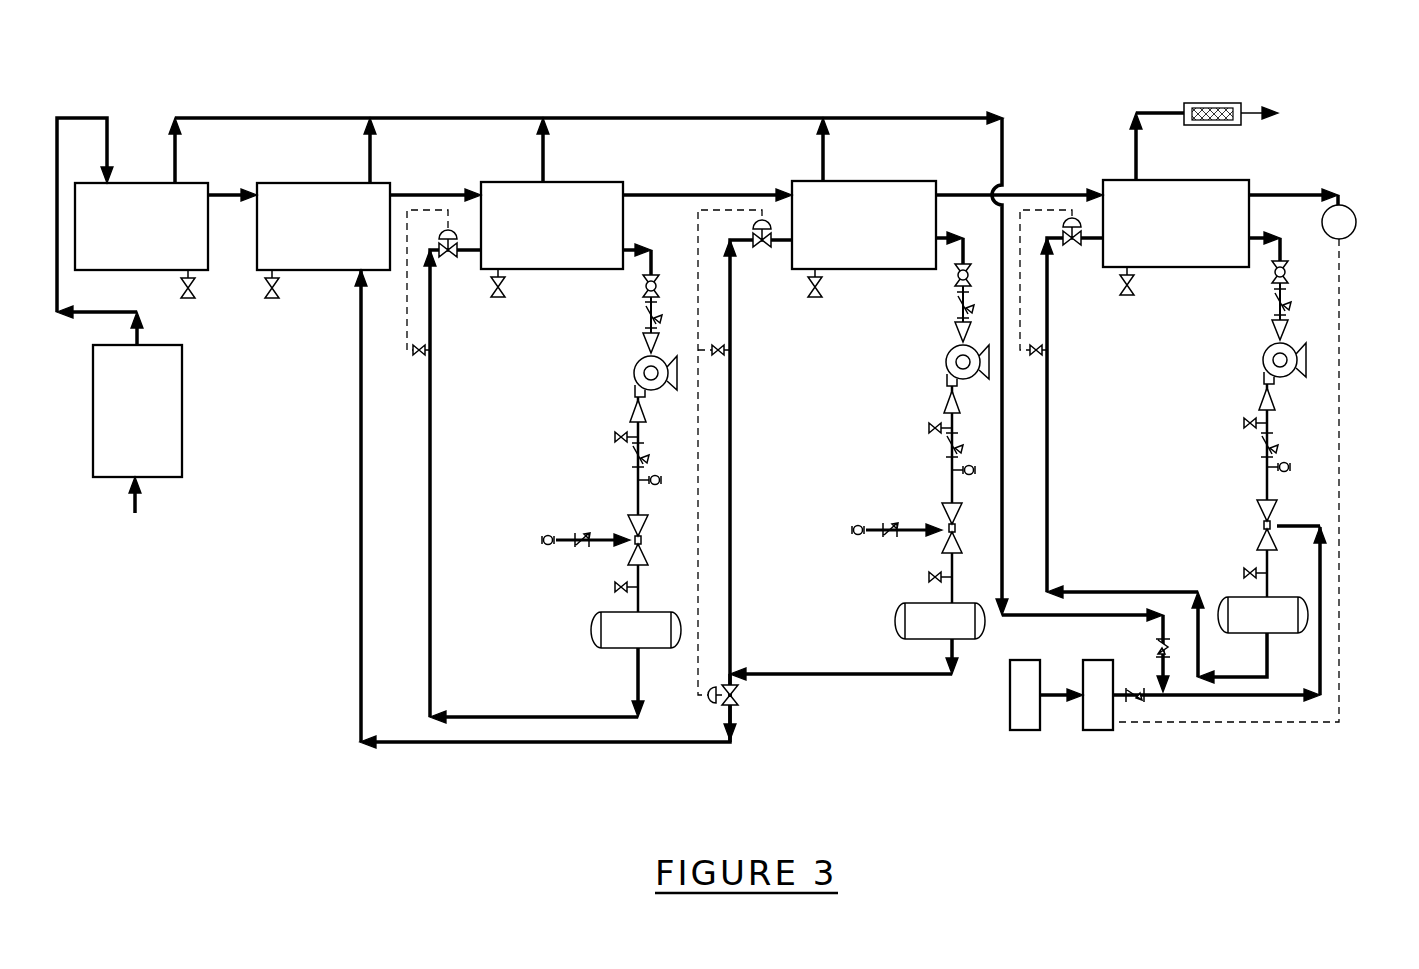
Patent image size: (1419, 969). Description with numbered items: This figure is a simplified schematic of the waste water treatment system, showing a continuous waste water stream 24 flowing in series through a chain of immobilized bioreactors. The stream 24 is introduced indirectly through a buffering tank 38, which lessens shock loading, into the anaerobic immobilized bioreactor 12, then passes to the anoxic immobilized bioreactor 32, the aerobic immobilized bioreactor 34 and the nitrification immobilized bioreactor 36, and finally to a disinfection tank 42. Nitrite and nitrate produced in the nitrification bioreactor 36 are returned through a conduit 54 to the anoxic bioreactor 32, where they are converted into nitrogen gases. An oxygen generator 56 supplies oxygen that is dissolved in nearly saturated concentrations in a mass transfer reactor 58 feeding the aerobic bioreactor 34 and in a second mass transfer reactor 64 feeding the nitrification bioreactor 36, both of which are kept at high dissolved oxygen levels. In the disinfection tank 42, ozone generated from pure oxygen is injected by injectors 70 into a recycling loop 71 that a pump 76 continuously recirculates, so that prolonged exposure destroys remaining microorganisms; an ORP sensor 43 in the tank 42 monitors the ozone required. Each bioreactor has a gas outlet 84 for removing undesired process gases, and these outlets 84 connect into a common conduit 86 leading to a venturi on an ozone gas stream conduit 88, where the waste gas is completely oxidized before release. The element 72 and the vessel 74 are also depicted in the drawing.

The anaerobic immobilized bioreactor 12 is at (183, 217).
The waste water stream 24 is at (72, 118).
The anoxic immobilized bioreactor 32 is at (293, 252).
The aerobic immobilized bioreactor 34 is at (547, 215).
The nitrification immobilized bioreactor 36 is at (847, 217).
The buffering tank 38 is at (157, 437).
The disinfection tank 42 is at (1162, 235).
The ORP sensor 43 is at (1333, 220).
The conduit 54 is at (677, 742).
The oxygen generator 56 is at (1025, 705).
The mass transfer reactor 58 is at (632, 633).
The second mass transfer reactor 64 is at (937, 622).
The injectors 70 is at (1262, 525).
The recycling loop 71 is at (1158, 592).
The metering unit 72 is at (1095, 695).
The third surge tank 74 is at (1247, 618).
The pump 76 is at (1263, 360).
The gas outlet 84 is at (175, 157).
The common conduit 86 is at (490, 118).
The ozone gas stream conduit 88 is at (1205, 695).